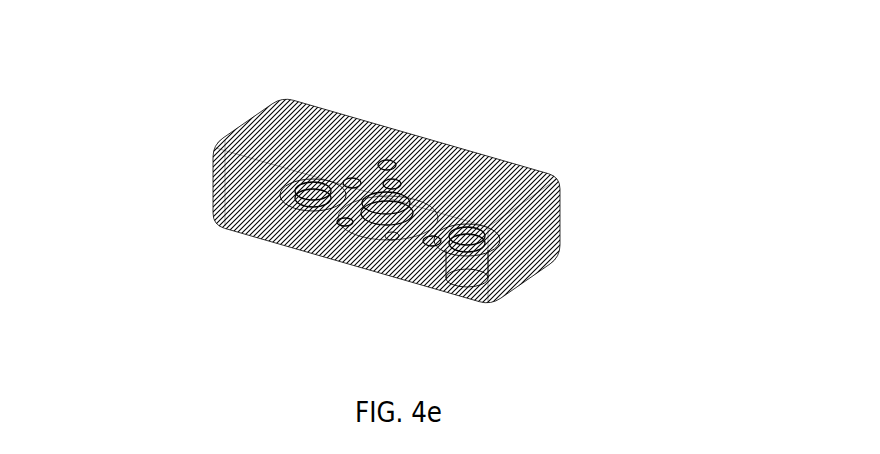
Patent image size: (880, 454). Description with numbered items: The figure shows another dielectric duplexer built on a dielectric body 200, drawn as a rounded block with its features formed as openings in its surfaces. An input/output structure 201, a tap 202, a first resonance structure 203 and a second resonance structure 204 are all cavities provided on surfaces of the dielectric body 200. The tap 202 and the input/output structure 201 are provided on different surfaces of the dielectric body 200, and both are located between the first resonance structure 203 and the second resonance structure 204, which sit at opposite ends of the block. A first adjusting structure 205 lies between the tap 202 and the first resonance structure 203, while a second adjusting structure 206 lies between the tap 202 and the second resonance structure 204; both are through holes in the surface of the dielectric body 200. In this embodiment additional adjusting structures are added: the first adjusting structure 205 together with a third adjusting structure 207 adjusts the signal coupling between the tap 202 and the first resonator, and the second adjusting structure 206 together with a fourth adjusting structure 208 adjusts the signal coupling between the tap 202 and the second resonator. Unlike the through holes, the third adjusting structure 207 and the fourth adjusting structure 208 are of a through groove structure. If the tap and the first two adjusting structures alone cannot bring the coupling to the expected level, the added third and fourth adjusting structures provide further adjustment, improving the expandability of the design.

The dielectric body 200 is at (302, 142).
The input/output structure 201 is at (390, 183).
The tap 202 is at (390, 235).
The first resonance structure 203 is at (302, 205).
The second resonance structure 204 is at (473, 260).
The first adjusting structure 205 is at (353, 242).
The second adjusting structure 206 is at (410, 168).
The third adjusting structure 207 is at (343, 220).
The fourth adjusting structure 208 is at (435, 242).